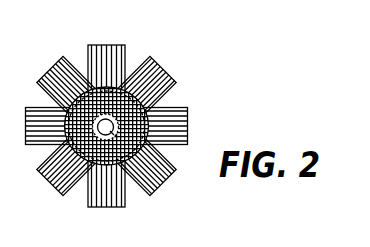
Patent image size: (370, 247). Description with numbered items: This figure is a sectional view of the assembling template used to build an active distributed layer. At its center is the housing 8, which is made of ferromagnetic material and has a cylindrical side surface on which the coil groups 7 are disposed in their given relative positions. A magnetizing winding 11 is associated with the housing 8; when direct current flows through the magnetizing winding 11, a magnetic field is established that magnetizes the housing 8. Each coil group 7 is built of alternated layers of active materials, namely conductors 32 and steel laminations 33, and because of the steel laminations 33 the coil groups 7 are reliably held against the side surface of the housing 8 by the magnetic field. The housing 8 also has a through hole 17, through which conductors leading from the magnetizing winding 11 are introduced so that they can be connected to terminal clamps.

The coil group 7 is at (85, 44).
The housing 8 is at (85, 175).
The magnetizing winding 11 is at (162, 161).
The through hole 17 is at (156, 114).
The conductors 32 is at (124, 52).
The steel laminations 33 is at (127, 62).